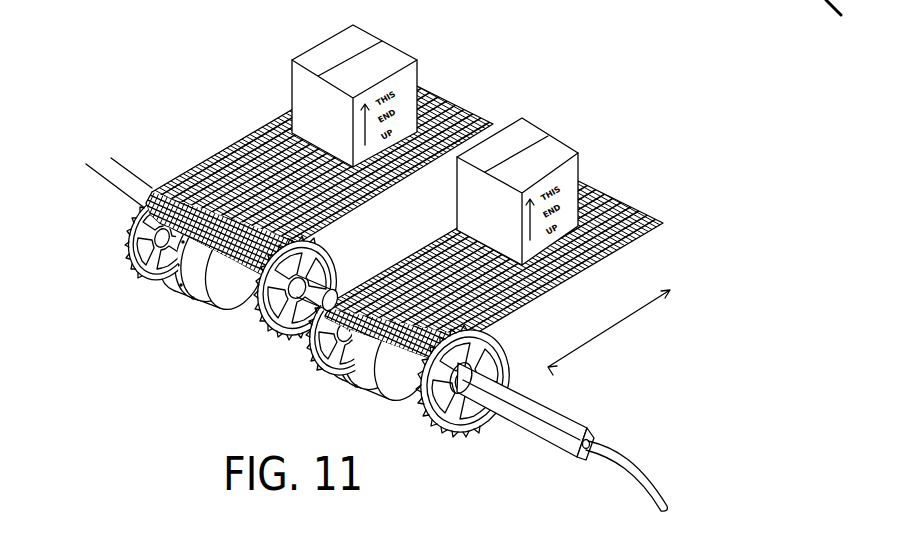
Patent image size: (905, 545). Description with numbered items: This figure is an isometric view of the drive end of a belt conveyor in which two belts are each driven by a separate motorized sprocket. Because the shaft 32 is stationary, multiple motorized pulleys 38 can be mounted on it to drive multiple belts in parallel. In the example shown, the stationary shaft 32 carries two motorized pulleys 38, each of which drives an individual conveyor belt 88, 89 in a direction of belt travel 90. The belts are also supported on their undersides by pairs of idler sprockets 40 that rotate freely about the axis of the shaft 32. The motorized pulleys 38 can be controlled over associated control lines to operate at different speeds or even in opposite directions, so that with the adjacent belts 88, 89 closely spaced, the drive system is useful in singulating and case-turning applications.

The shaft 32 is at (552, 437).
The motorized pulley 38 is at (193, 290).
The idler sprocket 40 is at (145, 261).
The conveyor belt 88 is at (583, 263).
The conveyor belt 89 is at (251, 126).
The direction of belt travel 90 is at (601, 333).